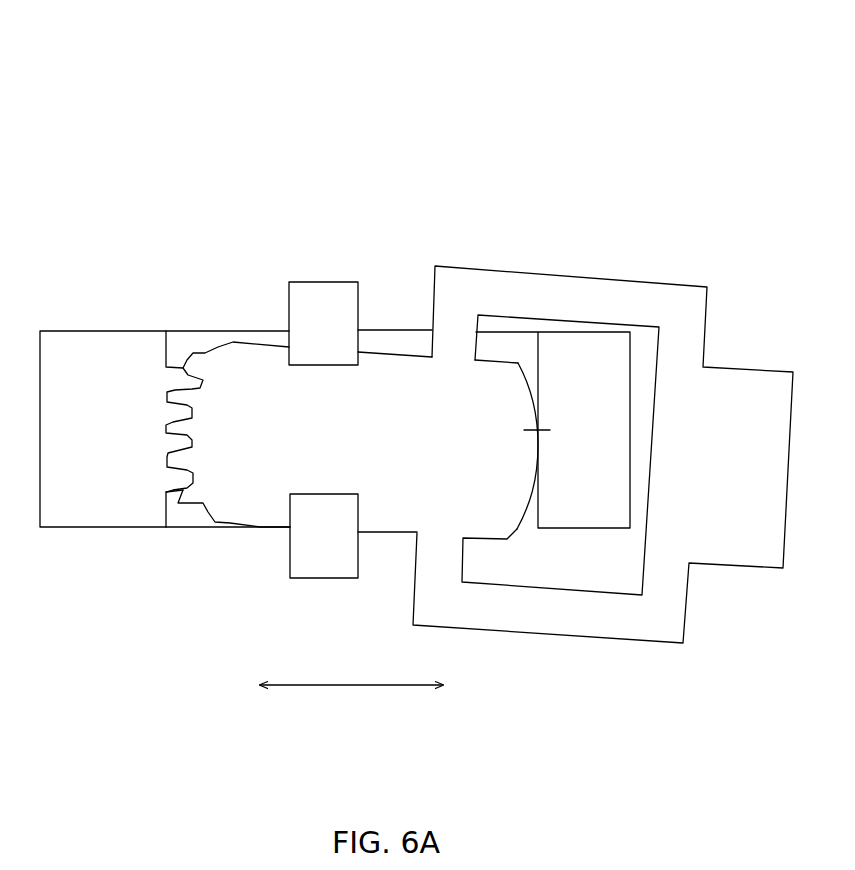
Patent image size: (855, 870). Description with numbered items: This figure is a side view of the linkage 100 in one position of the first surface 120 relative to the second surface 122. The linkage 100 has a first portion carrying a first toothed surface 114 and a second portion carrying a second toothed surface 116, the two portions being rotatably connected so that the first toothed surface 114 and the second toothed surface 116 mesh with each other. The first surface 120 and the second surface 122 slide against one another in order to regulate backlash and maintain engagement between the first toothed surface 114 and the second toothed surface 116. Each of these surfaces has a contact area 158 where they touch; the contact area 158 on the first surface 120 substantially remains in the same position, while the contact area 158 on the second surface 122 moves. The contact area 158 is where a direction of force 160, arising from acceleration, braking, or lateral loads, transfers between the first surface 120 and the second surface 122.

The linkage 100 is at (305, 172).
The first toothed surface 114 is at (177, 367).
The second toothed surface 116 is at (183, 488).
The first surface 120 is at (538, 348).
The second surface 122 is at (538, 440).
The contact area 158 is at (538, 430).
The direction of force 160 is at (318, 685).